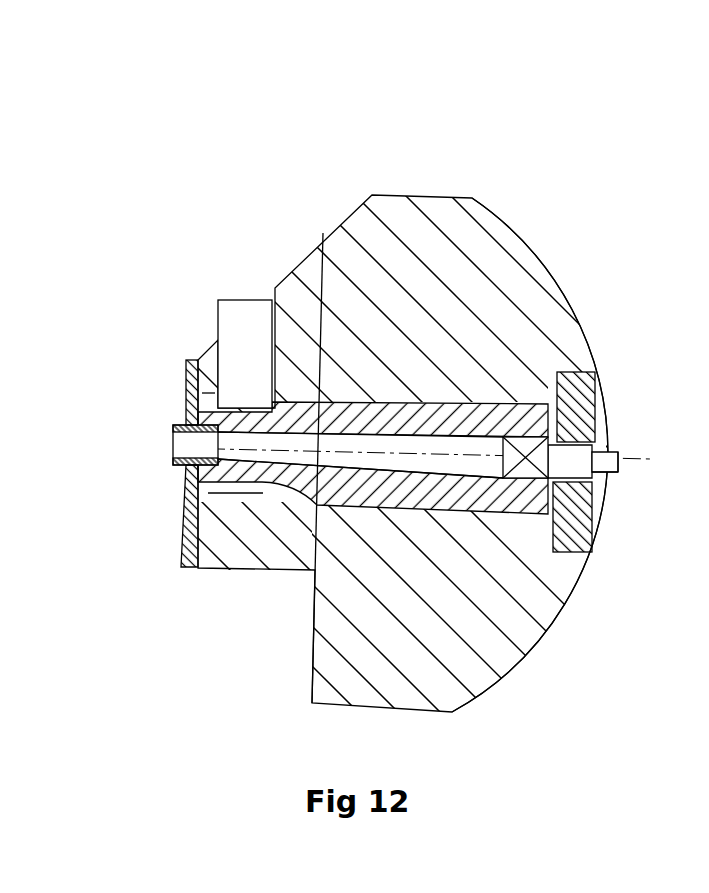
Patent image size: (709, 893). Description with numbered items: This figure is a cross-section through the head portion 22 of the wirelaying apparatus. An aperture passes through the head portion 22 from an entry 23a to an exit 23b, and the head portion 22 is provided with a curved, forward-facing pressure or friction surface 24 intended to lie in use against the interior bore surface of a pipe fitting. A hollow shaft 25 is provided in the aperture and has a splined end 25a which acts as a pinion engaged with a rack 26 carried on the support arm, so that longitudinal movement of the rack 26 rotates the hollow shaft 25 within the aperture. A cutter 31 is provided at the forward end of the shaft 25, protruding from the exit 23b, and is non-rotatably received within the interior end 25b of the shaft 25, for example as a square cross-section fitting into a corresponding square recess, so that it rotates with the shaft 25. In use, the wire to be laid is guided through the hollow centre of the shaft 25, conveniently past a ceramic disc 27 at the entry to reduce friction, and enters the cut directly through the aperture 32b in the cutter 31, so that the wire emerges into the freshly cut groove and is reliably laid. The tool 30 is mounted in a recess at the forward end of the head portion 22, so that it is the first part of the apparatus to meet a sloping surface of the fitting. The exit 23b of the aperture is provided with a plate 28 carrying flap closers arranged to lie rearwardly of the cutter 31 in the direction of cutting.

The head portion 22 is at (398, 212).
The entry 23a is at (172, 448).
The exit 23b is at (605, 430).
The pressure or friction surface 24 is at (495, 213).
The hollow shaft 25 is at (383, 495).
The splined end 25a is at (299, 404).
The interior end 25b is at (475, 479).
The rack 26 is at (245, 322).
The ceramic disc 27 is at (180, 424).
The plate 28 is at (580, 390).
The tool 30 is at (538, 453).
The cutter 31 is at (608, 473).
The aperture 32b is at (695, 459).